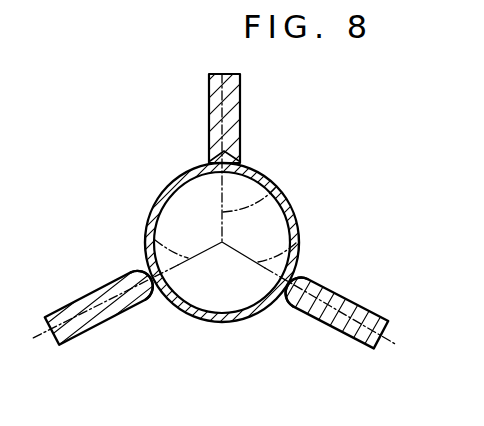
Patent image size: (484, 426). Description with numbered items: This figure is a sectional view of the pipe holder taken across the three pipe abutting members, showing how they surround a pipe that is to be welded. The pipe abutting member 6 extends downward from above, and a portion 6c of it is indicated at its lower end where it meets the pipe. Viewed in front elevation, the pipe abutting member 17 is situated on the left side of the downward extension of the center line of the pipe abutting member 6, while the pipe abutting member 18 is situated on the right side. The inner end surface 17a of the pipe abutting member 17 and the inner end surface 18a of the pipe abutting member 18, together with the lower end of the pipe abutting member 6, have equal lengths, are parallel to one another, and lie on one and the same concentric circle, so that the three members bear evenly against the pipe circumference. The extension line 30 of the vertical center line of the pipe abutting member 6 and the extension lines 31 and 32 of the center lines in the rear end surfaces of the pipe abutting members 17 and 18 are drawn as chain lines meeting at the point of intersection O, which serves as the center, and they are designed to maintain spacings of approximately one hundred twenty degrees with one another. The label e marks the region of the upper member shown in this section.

The pipe abutting member 6 is at (241, 107).
The roll end portion 6c is at (239, 163).
The pipe abutting member 17 is at (98, 326).
The inner end surface 17a is at (156, 296).
The pipe abutting member 18 is at (333, 332).
The inner end surface 18a is at (278, 293).
The extension line 30 is at (277, 193).
The extension line 31 is at (150, 242).
The extension line 32 is at (283, 246).
The point of intersection O is at (222, 241).
The eccentricity label e is at (165, 190).